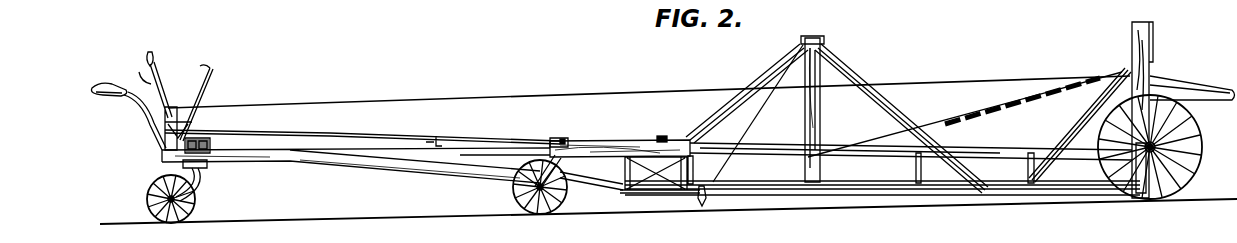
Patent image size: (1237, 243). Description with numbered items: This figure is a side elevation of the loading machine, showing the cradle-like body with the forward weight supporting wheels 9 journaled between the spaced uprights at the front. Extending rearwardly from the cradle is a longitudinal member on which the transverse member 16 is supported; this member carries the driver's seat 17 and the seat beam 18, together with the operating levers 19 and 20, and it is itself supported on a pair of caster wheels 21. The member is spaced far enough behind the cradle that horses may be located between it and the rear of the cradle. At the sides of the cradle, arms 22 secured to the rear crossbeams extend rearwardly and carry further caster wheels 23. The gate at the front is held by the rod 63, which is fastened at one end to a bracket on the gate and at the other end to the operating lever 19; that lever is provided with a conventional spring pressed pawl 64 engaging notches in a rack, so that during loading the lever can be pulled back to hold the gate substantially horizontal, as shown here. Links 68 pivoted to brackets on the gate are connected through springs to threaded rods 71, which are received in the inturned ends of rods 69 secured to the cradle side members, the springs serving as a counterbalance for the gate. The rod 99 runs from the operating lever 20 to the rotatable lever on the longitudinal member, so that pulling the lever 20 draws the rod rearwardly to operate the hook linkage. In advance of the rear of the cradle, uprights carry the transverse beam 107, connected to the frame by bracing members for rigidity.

The forward weight supporting wheel 9 is at (1195, 145).
The transverse member 16 is at (205, 152).
The driver's seat 17 is at (110, 83).
The seat beam 18 is at (134, 113).
The operating lever 19 is at (157, 76).
The operating lever 20 is at (212, 68).
The caster wheel 21 is at (197, 205).
The arm 22 is at (615, 147).
The caster wheel 23 is at (567, 202).
The rod 63 is at (646, 92).
The spring pressed pawl 64 is at (133, 72).
The link 68 is at (1123, 68).
The rod 69 is at (862, 144).
The threaded rod 71 is at (925, 123).
The rod 99 is at (407, 141).
The transverse beam 107 is at (823, 38).